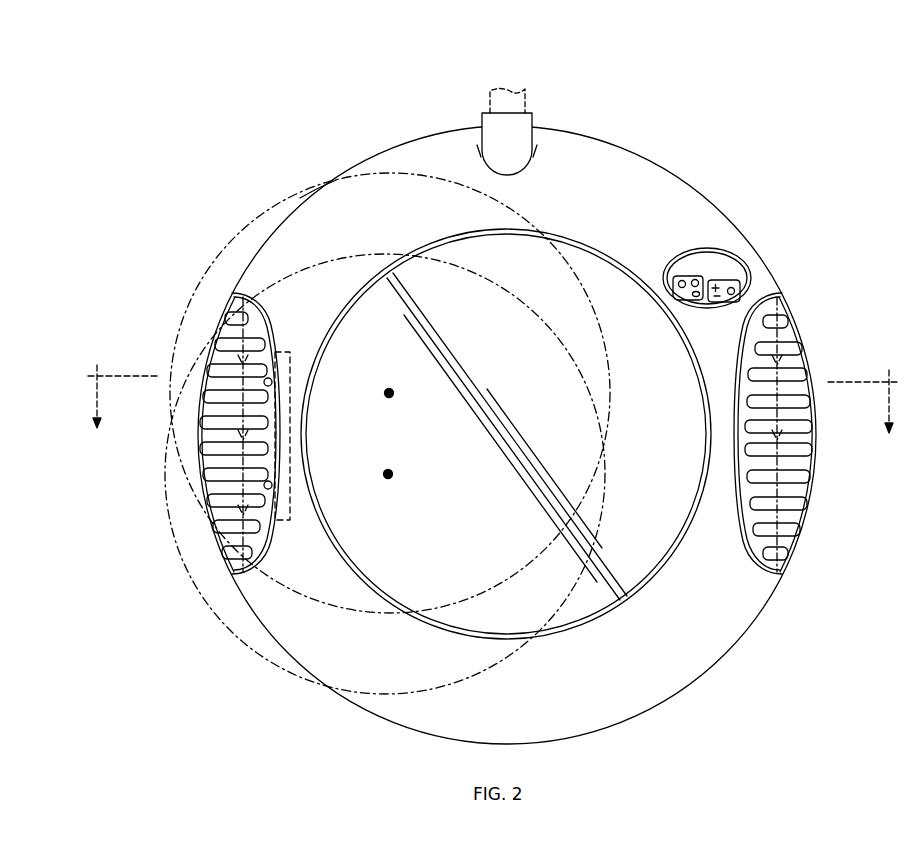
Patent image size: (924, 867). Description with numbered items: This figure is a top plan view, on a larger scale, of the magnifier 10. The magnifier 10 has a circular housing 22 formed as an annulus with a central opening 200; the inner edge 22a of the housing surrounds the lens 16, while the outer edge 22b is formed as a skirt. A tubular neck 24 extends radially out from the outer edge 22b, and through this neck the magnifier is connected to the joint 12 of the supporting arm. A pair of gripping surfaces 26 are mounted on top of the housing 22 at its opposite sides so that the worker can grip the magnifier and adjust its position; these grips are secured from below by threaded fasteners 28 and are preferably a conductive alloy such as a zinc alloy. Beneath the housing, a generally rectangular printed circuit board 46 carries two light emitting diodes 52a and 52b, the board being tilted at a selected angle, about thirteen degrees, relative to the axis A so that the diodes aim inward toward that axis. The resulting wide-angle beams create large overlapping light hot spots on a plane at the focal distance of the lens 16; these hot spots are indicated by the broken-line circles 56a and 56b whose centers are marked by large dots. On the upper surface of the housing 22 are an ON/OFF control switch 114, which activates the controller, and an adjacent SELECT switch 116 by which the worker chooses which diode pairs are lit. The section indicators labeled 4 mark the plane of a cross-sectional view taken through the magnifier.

The magnifier 10 is at (376, 136).
The joint 12 is at (530, 98).
The lens 16 is at (503, 360).
The circular housing 22 is at (345, 195).
The inner edge 22a is at (408, 278).
The outer edge 22b is at (318, 190).
The tubular neck 24 is at (533, 130).
The gripping surfaces 26 is at (240, 300).
The threaded fasteners 28 is at (228, 325).
The printed circuit board 46 is at (290, 520).
The light emitting diode 52a is at (275, 383).
The light emitting diode 52b is at (275, 485).
The light hot spot 56a is at (300, 189).
The light hot spot 56b is at (393, 476).
The ON/OFF control switch 114 is at (733, 286).
The SELECT switch 116 is at (705, 278).
The opening 200 is at (590, 250).
The axis A is at (505, 443).
The section line 4 is at (493, 412).